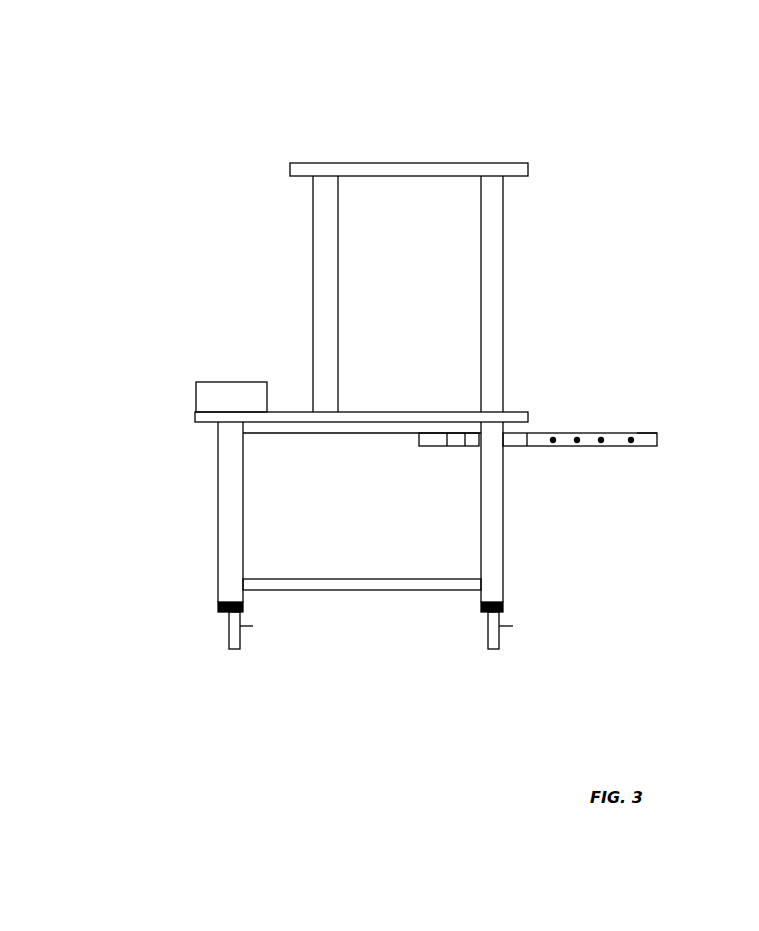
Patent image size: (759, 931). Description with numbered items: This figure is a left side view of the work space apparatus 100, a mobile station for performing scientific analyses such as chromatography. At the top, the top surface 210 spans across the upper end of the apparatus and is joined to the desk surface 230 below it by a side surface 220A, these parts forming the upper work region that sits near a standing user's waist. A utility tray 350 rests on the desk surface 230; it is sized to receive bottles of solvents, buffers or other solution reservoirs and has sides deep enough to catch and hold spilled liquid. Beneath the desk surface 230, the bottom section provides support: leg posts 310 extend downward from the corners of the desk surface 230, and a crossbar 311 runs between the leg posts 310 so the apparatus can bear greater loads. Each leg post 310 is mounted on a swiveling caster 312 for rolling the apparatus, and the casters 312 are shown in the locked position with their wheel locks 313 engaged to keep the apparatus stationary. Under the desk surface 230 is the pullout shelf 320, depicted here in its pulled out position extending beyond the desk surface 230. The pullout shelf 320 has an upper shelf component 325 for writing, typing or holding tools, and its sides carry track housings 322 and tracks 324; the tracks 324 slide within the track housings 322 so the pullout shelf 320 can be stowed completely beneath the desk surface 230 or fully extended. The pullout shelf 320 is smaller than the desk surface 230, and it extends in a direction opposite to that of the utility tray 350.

The work space apparatus 100 is at (94, 46).
The top surface 210 is at (539, 167).
The side surface 220A is at (469, 288).
The desk surface 230 is at (539, 417).
The utility tray 350 is at (185, 398).
The leg post 310 is at (207, 535).
The crossbar 311 is at (347, 601).
The caster 312 is at (510, 654).
The wheel lock 313 is at (529, 626).
The pullout shelf 320 is at (668, 441).
The track housing 322 is at (425, 458).
The track 324 is at (610, 455).
The shelf component 325 is at (644, 425).